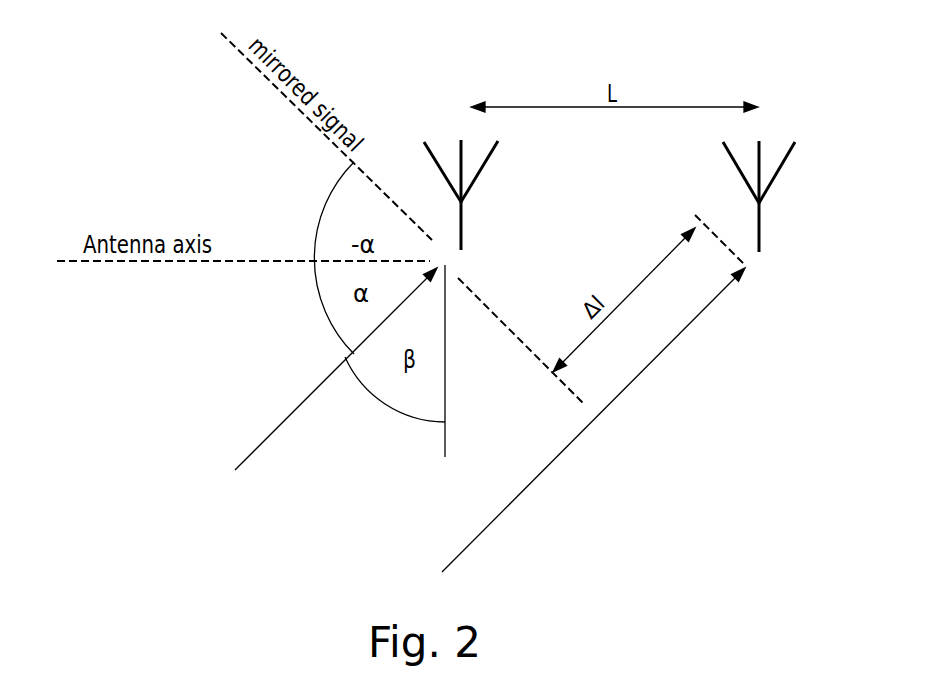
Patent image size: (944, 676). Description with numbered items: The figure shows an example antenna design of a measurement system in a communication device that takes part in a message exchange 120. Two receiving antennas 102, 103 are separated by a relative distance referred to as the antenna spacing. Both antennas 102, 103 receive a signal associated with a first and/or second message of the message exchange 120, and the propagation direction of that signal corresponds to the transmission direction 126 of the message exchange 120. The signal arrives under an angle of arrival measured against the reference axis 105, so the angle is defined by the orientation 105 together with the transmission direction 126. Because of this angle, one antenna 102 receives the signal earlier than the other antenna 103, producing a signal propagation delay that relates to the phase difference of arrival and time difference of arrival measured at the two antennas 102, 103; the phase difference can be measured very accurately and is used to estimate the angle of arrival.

The first antenna 102 is at (460, 152).
The second antenna 103 is at (760, 155).
The reference axis 105 is at (447, 352).
The message exchange 120 is at (243, 460).
The transmission direction 126 is at (315, 395).